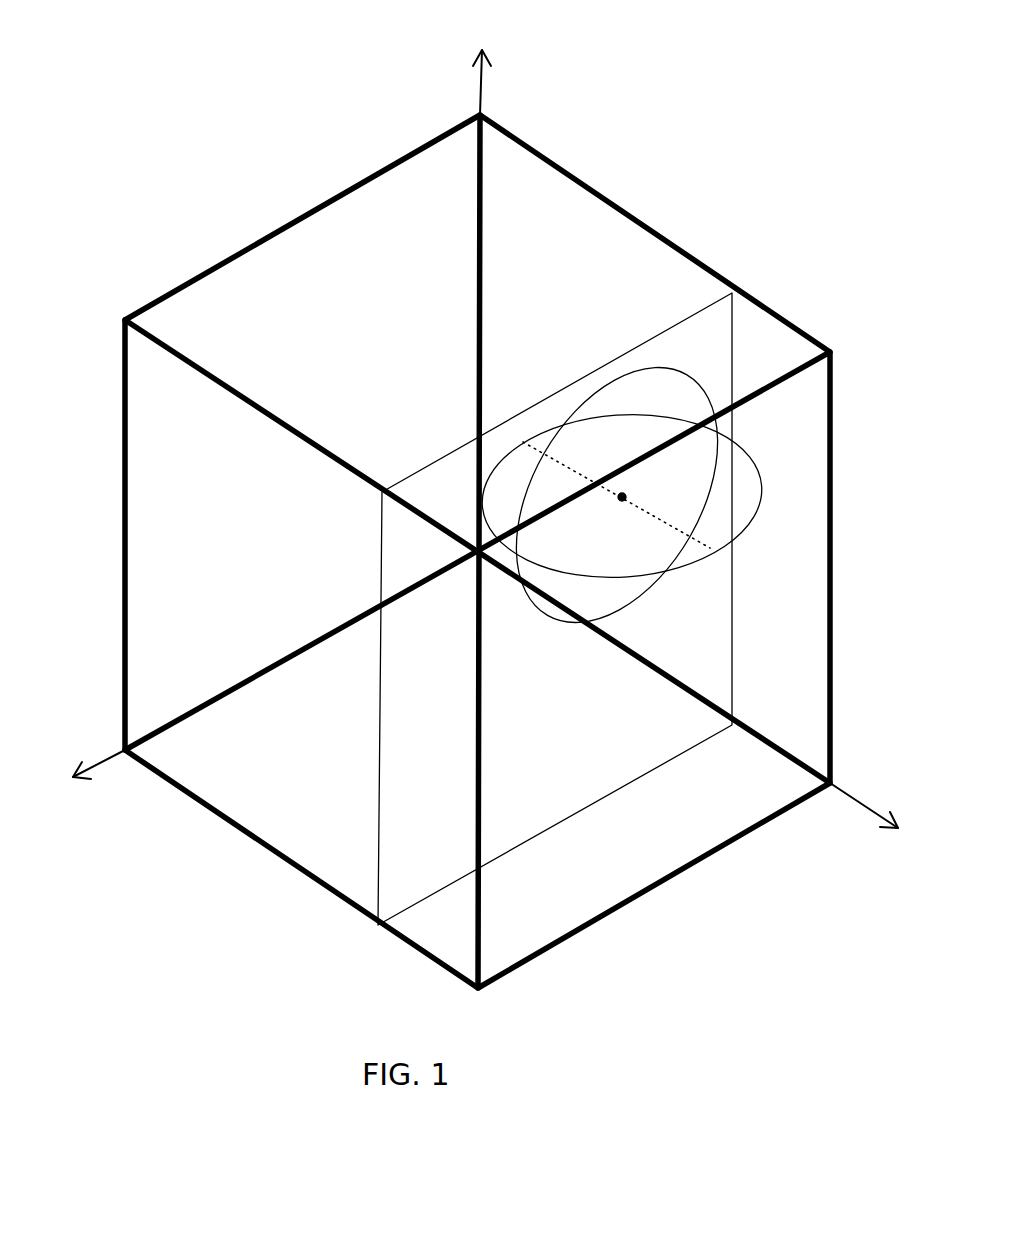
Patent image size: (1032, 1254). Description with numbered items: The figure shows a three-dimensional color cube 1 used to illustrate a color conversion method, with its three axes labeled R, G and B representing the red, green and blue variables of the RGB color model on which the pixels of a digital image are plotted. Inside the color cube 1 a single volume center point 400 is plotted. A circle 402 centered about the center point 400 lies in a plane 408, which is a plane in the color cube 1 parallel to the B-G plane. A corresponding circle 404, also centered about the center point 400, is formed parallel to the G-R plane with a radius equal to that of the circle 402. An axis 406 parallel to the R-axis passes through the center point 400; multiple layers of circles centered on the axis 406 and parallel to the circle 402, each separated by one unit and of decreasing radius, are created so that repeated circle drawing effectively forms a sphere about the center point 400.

The color cube 1 is at (597, 228).
The volume center point 400 is at (617, 500).
The circle 402 is at (620, 380).
The corresponding circle 404 is at (758, 480).
The axis 406 is at (700, 550).
The plane 408 is at (375, 863).